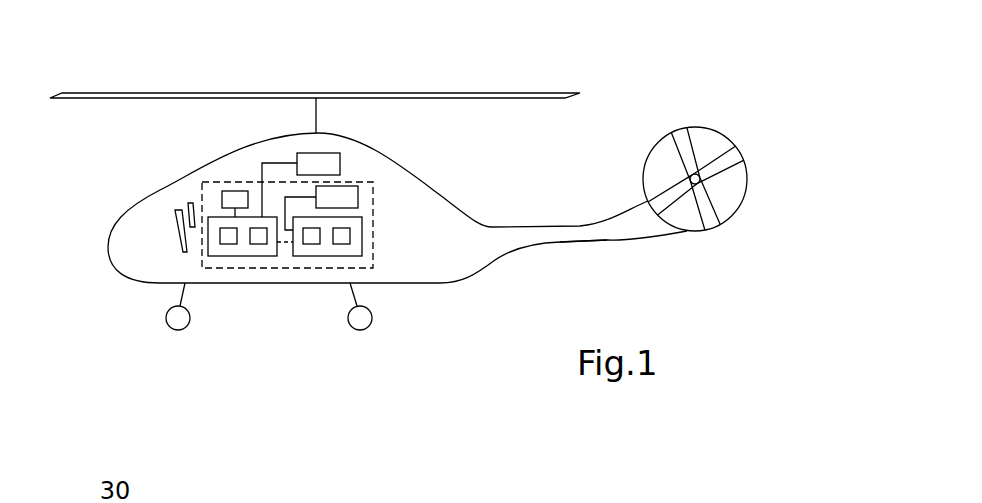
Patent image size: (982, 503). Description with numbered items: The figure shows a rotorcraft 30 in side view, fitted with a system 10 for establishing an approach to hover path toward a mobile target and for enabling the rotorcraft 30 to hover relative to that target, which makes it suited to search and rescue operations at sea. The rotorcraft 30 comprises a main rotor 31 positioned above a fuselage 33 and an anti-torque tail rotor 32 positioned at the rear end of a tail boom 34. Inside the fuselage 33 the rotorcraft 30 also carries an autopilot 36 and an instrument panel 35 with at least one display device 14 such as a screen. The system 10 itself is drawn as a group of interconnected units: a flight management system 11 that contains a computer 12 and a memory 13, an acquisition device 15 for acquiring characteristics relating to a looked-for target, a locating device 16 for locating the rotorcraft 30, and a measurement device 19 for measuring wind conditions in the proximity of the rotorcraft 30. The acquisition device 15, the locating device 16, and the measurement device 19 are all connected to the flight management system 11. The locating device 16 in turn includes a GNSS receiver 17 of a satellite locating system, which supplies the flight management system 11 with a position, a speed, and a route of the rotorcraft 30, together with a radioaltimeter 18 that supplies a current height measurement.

The system 10 is at (373, 248).
The flight management system 11 is at (268, 256).
The computer 12 is at (228, 244).
The memory 13 is at (257, 244).
The display device 14 is at (192, 203).
The acquisition device 15 is at (358, 197).
The locating device 16 is at (362, 228).
The GNSS receiver 17 is at (313, 244).
The radioaltimeter 18 is at (342, 244).
The measurement device 19 is at (222, 199).
The rotorcraft 30 is at (415, 340).
The main rotor 31 is at (452, 93).
The anti-torque tail rotor 32 is at (705, 127).
The fuselage 33 is at (220, 162).
The tail boom 34 is at (605, 240).
The instrument panel 35 is at (183, 227).
The autopilot 36 is at (340, 163).